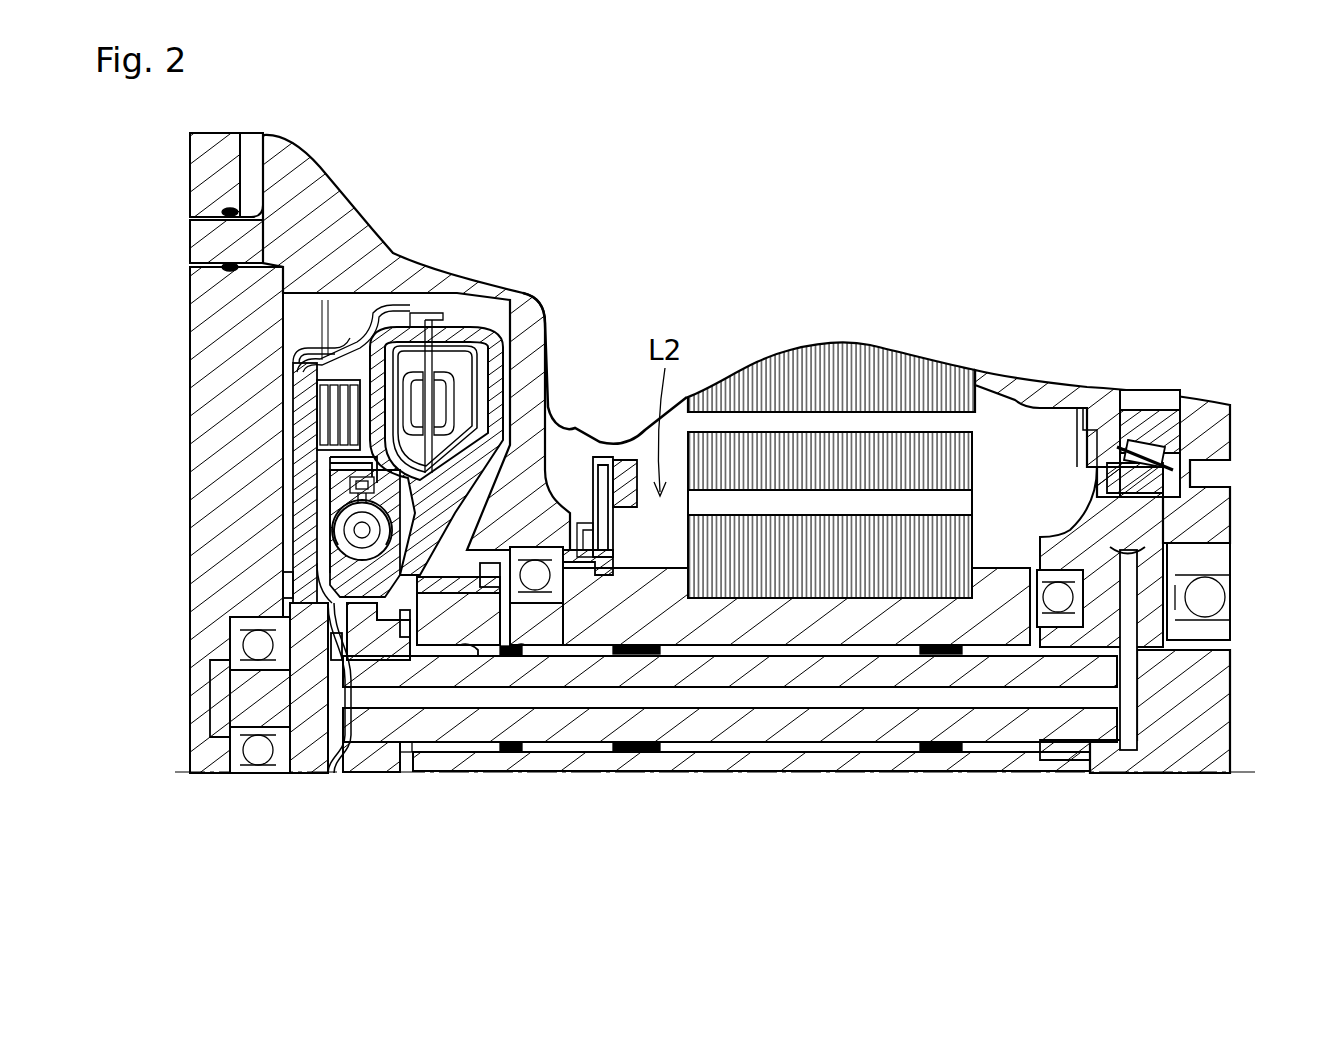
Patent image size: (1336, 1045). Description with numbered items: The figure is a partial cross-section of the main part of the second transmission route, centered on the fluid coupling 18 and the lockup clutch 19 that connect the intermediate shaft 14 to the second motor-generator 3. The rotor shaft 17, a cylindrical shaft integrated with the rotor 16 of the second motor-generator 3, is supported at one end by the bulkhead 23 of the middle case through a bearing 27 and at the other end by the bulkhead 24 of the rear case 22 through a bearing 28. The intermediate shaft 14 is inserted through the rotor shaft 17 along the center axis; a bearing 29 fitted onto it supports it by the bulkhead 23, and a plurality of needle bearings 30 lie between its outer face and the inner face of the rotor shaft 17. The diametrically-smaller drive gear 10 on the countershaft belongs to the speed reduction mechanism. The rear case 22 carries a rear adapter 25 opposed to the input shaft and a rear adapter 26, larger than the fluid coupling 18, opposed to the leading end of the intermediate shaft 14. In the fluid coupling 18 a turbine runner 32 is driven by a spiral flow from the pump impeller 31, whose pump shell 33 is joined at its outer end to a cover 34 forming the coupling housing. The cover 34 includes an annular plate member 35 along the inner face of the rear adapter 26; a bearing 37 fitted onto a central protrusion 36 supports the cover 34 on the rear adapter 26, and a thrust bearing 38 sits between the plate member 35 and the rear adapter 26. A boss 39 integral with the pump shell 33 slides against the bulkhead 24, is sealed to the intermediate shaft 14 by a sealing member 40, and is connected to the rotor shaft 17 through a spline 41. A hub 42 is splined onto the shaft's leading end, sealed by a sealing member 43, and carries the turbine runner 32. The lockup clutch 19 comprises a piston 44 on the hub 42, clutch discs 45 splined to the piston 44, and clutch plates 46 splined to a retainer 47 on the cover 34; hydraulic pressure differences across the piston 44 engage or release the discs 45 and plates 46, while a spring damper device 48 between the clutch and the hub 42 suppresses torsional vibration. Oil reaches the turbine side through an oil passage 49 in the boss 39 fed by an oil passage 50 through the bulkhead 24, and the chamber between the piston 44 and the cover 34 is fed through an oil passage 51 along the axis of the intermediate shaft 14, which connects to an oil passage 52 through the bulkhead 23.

The second motor-generator 3 is at (884, 362).
The drive gear 10 is at (1215, 418).
The intermediate shaft 14 is at (1220, 690).
The rotor 16 is at (930, 448).
The rotor shaft 17 is at (857, 625).
The fluid coupling 18 is at (462, 325).
The lockup clutch 19 is at (312, 398).
The rear case 22 is at (320, 205).
The bulkhead 23 is at (1130, 478).
The bulkhead 24 is at (525, 385).
The rear adapter 25 is at (200, 178).
The rear adapter 26 is at (210, 485).
The bearing 27 is at (1042, 578).
The bearing 28 is at (550, 552).
The bearing 29 is at (1215, 560).
The needle bearings 30 is at (632, 752).
The pump impeller 31 is at (520, 340).
The turbine runner 32 is at (402, 368).
The pump shell 33 is at (464, 318).
The cover 34 is at (305, 350).
The annular plate member 35 is at (308, 462).
The protrusion 36 is at (255, 690).
The bearing 37 is at (245, 662).
The thrust bearing 38 is at (283, 590).
The boss 39 is at (470, 628).
The sealing member 40 is at (430, 590).
The spline 41 is at (532, 660).
The hub 42 is at (330, 637).
The sealing member 43 is at (320, 610).
The piston 44 is at (320, 500).
The clutch discs 45 is at (315, 420).
The clutch plate 46 is at (355, 340).
The retainer 47 is at (330, 360).
The spring damper device 48 is at (335, 540).
The oil passage 49 is at (372, 728).
The oil passage 50 is at (557, 545).
The oil passage 51 is at (590, 700).
The oil passage 52 is at (1125, 555).